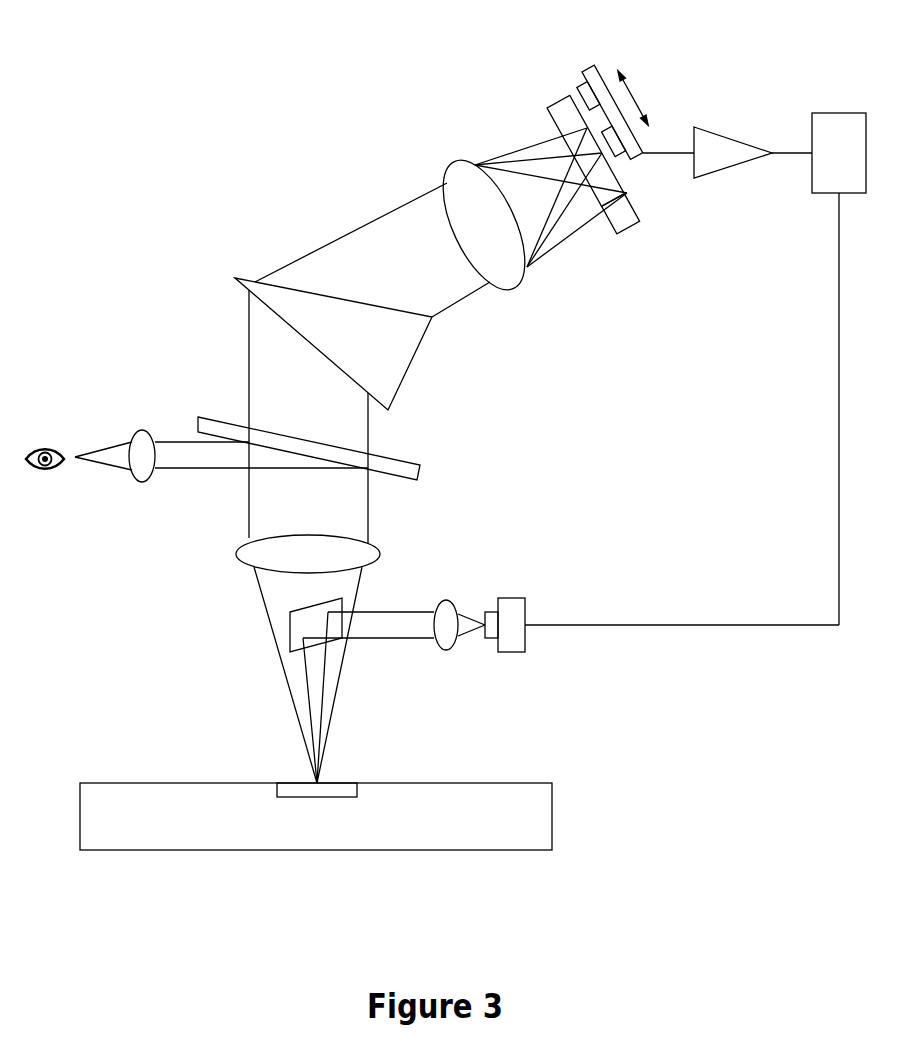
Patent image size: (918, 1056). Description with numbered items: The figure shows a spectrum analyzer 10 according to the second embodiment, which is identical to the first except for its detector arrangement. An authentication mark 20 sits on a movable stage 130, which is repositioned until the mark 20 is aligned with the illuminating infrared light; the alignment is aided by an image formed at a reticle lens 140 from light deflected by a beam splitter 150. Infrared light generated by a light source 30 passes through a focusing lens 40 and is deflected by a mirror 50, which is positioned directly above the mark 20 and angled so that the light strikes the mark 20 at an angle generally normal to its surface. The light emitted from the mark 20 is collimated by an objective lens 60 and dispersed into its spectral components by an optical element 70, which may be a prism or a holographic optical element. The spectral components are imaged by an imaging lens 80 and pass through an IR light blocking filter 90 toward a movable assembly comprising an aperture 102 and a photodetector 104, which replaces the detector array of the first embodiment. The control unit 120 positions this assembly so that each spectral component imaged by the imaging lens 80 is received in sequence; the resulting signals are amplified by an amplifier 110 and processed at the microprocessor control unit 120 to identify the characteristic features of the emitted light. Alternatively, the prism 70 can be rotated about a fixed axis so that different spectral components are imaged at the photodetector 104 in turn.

The spectrum analyzer 10 is at (138, 172).
The authentication mark 20 is at (342, 797).
The light source 30 is at (523, 600).
The focusing lens 40 is at (450, 652).
The mirror 50 is at (288, 625).
The objective lens 60 is at (377, 547).
The optical element 70 is at (413, 365).
The imaging lens 80 is at (447, 180).
The IR light blocking filter 90 is at (635, 220).
The aperture 102 is at (577, 90).
The photodetector 104 is at (593, 65).
The amplifier 110 is at (707, 127).
The microprocessor control unit 120 is at (839, 113).
The movable stage 130 is at (132, 783).
The reticle lens 140 is at (138, 430).
The beam splitter 150 is at (423, 468).